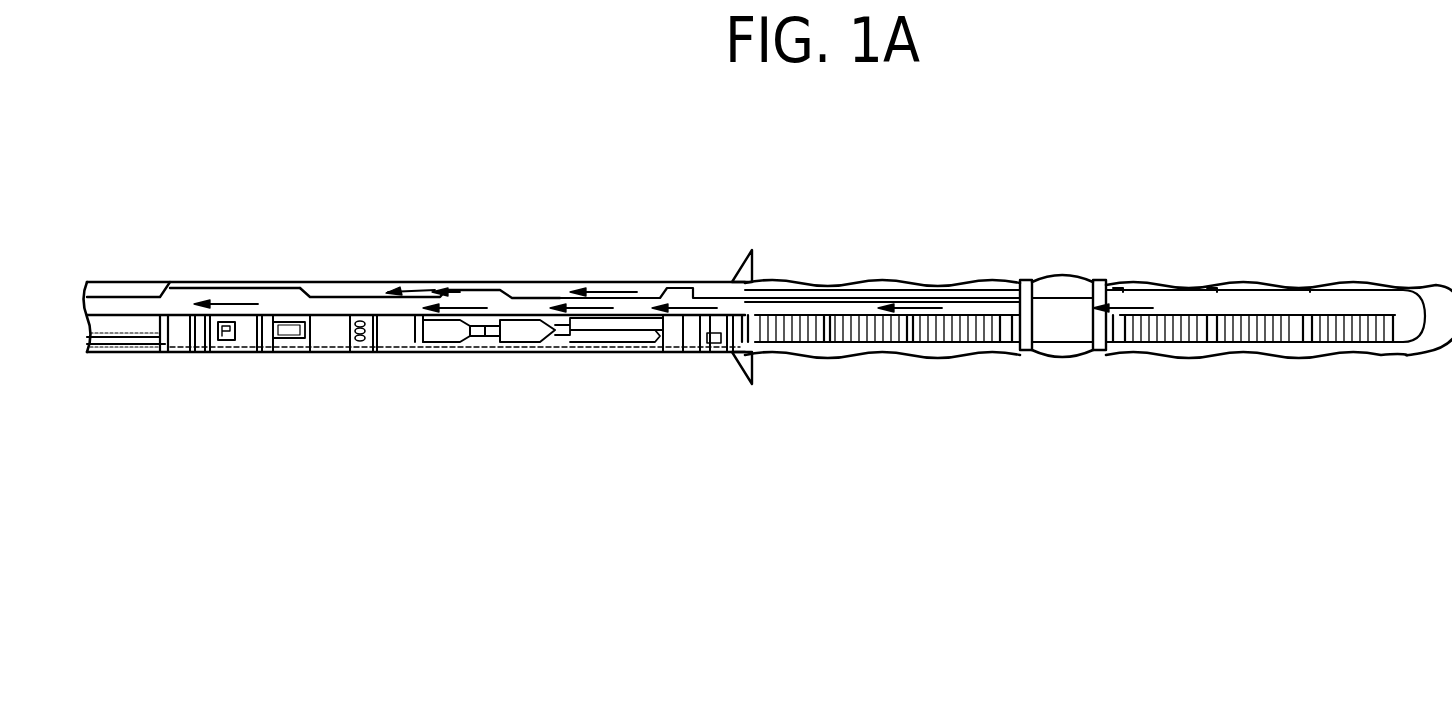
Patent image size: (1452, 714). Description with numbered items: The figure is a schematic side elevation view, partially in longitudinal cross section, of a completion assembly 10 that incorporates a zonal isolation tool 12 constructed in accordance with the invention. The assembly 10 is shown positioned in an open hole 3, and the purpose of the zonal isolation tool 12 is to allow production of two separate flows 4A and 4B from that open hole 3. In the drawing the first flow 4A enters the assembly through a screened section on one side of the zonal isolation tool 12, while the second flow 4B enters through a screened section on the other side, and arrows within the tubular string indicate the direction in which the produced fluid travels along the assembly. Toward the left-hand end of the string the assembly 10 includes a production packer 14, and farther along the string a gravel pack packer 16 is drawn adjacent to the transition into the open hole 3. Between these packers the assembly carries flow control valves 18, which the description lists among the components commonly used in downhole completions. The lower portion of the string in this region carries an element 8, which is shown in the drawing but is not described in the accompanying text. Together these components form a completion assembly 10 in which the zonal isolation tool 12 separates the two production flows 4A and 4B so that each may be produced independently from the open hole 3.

The completion assembly 10 is at (345, 166).
The production packer 14 is at (219, 282).
The flow control valves 18 is at (477, 285).
The gravel pack packer 16 is at (693, 292).
The service tool 8 is at (560, 352).
The first separate flow 4A is at (995, 228).
The zonal isolation tool 12 is at (1066, 285).
The open hole 3 is at (1135, 277).
The second separate flow 4B is at (1162, 272).